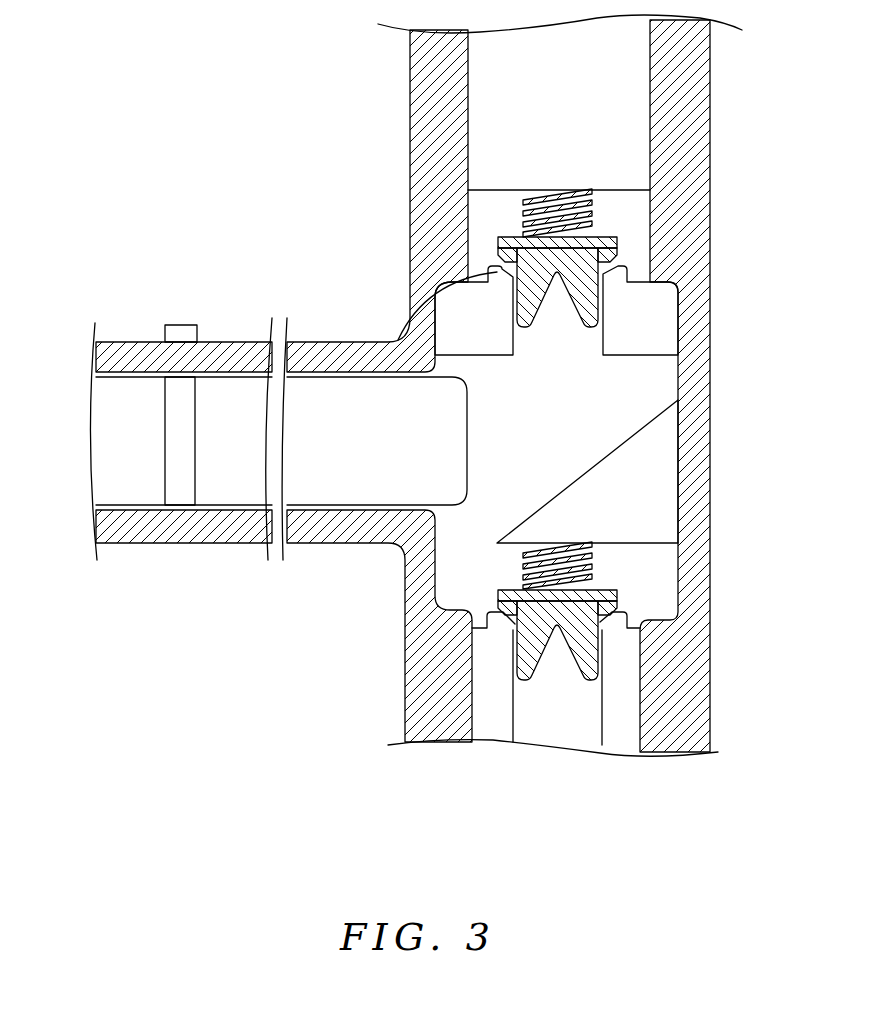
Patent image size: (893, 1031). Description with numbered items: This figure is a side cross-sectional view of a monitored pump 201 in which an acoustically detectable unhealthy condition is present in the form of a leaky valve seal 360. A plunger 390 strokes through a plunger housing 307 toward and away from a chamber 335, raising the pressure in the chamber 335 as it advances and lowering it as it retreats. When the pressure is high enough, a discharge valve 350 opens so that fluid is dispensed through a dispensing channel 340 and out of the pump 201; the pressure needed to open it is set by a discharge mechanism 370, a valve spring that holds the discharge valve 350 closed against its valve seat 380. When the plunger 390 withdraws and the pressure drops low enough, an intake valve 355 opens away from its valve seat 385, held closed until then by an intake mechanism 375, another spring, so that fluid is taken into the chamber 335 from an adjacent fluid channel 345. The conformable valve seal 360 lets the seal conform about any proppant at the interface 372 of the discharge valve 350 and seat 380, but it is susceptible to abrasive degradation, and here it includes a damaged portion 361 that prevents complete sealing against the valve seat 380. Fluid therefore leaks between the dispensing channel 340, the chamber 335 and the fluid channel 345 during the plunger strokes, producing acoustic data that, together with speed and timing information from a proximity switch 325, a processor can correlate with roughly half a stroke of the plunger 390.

The pump 201 is at (136, 46).
The plunger housing 307 is at (318, 342).
The proximity switch 325 is at (184, 332).
The chamber 335 is at (572, 429).
The dispensing channel 340 is at (518, 223).
The fluid channel 345 is at (577, 728).
The discharge valve 350 is at (592, 312).
The intake valve 355 is at (607, 598).
The valve seal 360 is at (607, 247).
The damaged portion 361 is at (406, 316).
The discharge mechanism 370 is at (608, 206).
The interface 372 is at (486, 255).
The intake mechanism 375 is at (497, 574).
The valve seat 380 is at (447, 295).
The valve seat 385 is at (614, 705).
The plunger 390 is at (370, 478).